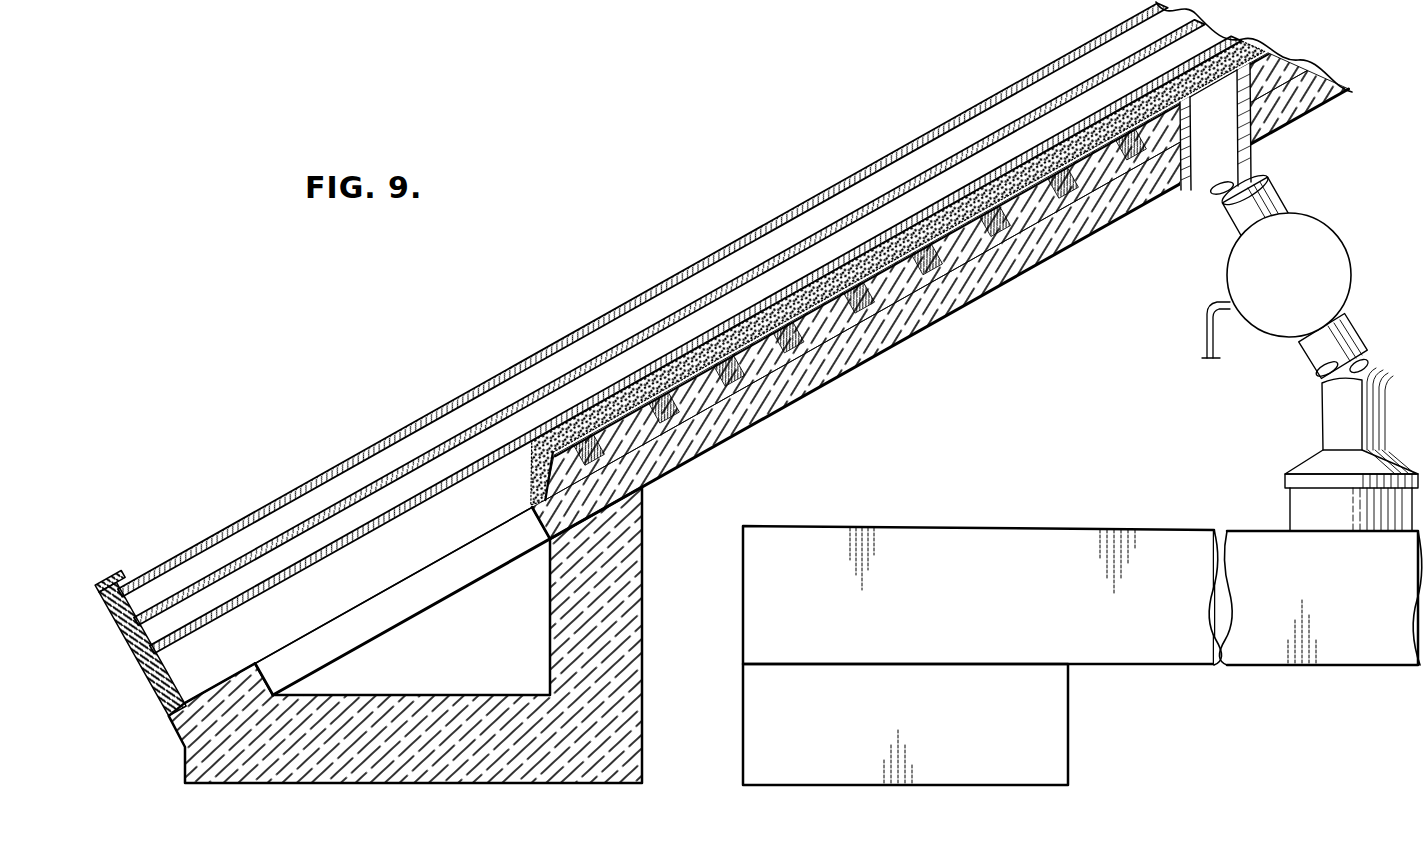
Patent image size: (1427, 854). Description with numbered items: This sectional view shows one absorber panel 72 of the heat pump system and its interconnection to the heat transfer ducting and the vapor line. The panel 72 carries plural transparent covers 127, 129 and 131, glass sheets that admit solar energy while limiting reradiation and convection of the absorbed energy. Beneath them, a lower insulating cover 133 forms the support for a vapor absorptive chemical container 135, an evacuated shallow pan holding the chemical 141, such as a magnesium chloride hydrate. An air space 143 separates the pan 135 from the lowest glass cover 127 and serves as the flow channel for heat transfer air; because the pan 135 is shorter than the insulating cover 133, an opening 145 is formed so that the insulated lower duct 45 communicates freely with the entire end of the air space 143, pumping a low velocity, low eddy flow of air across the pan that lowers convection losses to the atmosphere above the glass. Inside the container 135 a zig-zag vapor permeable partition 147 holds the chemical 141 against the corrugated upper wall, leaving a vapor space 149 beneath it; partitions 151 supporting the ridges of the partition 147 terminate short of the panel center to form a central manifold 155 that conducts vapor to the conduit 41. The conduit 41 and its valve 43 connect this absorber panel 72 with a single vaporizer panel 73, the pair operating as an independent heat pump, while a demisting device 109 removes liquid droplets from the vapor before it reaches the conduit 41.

The vapor conduit 41 is at (1272, 196).
The valve 43 is at (1333, 252).
The lower duct 45 is at (437, 668).
The absorber panel 72 is at (643, 278).
The vaporizer panel 73 is at (1025, 508).
The demisting device 109 is at (1290, 512).
The transparent cover 127 is at (322, 557).
The transparent cover 129 is at (388, 478).
The transparent cover 131 is at (452, 401).
The lower insulating cover 133 is at (1003, 298).
The vapor absorptive chemical container 135 is at (788, 297).
The vapor absorptive chemical 141 is at (712, 447).
The air space 143 is at (750, 428).
The opening 145 is at (296, 660).
The vapor permeable partition 147 is at (790, 373).
The vapor space 149 is at (822, 325).
The partition 151 is at (858, 318).
The central manifold 155 is at (1270, 66).